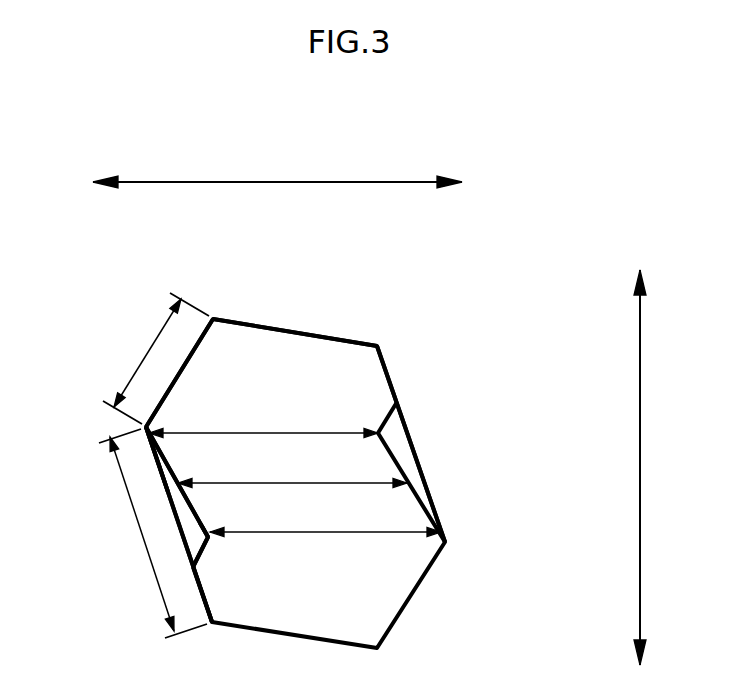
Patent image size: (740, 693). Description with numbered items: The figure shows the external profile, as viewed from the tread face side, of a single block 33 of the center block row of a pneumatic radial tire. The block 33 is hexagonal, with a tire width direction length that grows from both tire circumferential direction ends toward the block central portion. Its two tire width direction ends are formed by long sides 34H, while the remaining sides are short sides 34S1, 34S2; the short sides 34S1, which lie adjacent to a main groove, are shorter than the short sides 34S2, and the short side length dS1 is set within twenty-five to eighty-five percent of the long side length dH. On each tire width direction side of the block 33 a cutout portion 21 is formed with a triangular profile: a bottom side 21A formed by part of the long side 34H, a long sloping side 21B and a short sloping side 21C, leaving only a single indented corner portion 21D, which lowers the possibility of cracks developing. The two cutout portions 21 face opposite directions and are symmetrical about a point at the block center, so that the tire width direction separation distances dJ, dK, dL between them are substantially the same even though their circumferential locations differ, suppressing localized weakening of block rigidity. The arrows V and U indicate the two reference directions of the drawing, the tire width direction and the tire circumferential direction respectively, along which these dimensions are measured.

The block 33 is at (367, 375).
The short side 34S1 is at (193, 346).
The short side 34S2 is at (303, 333).
The long side 34H is at (418, 460).
The cutout portion 21 is at (397, 432).
The bottom side 21A is at (158, 471).
The long sloping side 21B is at (190, 502).
The short sloping side 21C is at (200, 543).
The corner portion 21D is at (198, 550).
The short side length dS1 is at (142, 351).
The long side length dH is at (132, 512).
The tire width direction separation distance dJ is at (263, 432).
The tire width direction separation distance dK is at (272, 483).
The tire width direction separation distance dL is at (343, 533).
The V direction V is at (277, 182).
The U direction U is at (641, 460).